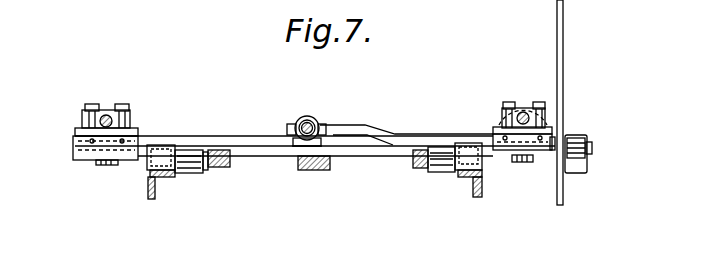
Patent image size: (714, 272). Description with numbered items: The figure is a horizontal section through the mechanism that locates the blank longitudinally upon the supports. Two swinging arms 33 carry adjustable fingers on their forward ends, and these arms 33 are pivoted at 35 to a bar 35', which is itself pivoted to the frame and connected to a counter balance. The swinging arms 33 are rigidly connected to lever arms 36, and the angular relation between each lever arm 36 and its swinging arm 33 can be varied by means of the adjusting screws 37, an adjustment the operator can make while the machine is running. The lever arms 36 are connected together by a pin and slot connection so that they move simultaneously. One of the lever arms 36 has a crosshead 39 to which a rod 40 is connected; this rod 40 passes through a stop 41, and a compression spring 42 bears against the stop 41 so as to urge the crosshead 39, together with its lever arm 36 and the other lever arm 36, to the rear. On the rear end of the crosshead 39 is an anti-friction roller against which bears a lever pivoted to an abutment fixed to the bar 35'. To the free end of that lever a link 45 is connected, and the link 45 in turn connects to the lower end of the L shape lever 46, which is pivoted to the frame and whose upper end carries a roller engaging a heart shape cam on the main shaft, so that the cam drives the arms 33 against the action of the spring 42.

The swinging arms 33 is at (106, 115).
The pivot 35 is at (315, 190).
The bar 35' is at (315, 184).
The lever arms 36 is at (386, 130).
The adjusting screws 37 is at (75, 140).
The crosshead 39 is at (295, 138).
The rod 40 is at (297, 122).
The stop 41 is at (300, 170).
The compression spring 42 is at (313, 122).
The link 45 is at (578, 135).
The L shape lever 46 is at (565, 68).